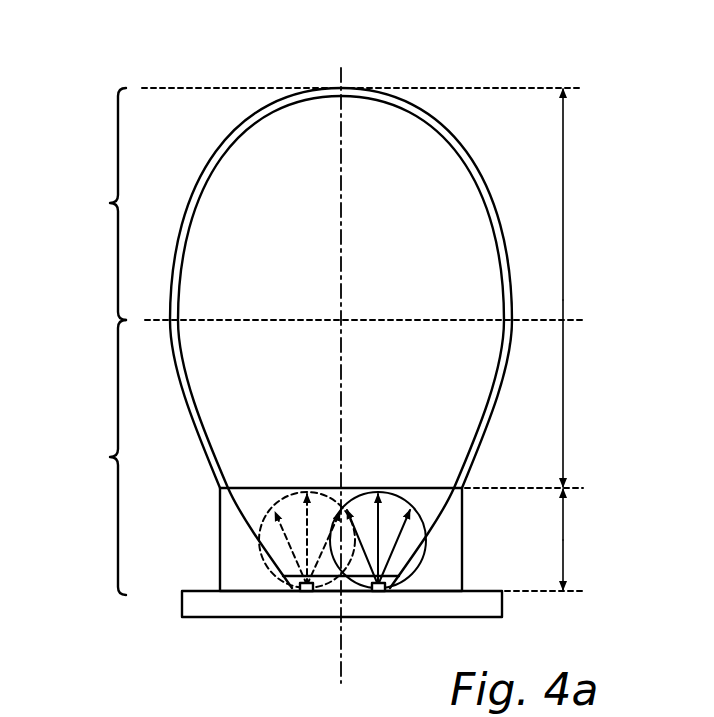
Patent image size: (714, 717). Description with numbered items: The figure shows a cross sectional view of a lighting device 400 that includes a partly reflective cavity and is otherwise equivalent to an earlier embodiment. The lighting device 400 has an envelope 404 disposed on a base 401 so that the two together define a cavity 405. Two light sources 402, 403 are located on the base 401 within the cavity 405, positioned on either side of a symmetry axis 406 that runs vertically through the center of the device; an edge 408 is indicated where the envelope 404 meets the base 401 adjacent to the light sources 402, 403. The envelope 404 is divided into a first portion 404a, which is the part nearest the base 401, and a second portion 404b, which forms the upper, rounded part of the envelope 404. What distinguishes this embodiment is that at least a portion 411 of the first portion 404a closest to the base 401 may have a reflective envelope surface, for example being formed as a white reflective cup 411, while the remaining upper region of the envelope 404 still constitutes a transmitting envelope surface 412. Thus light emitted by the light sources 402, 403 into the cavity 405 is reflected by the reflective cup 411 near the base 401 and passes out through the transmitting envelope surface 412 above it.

The lighting device 400 is at (178, 56).
The base 401 is at (495, 603).
The light source 402 is at (303, 588).
The light source 403 is at (377, 587).
The envelope 404 is at (508, 270).
The first portion 404a is at (82, 457).
The second portion 404b is at (82, 204).
The cavity 405 is at (410, 180).
The symmetry axis 406 is at (340, 590).
The edge 408 is at (297, 586).
The reflective envelope portion (white reflective cup) 411 is at (562, 540).
The transmitting envelope surface 412 is at (381, 288).